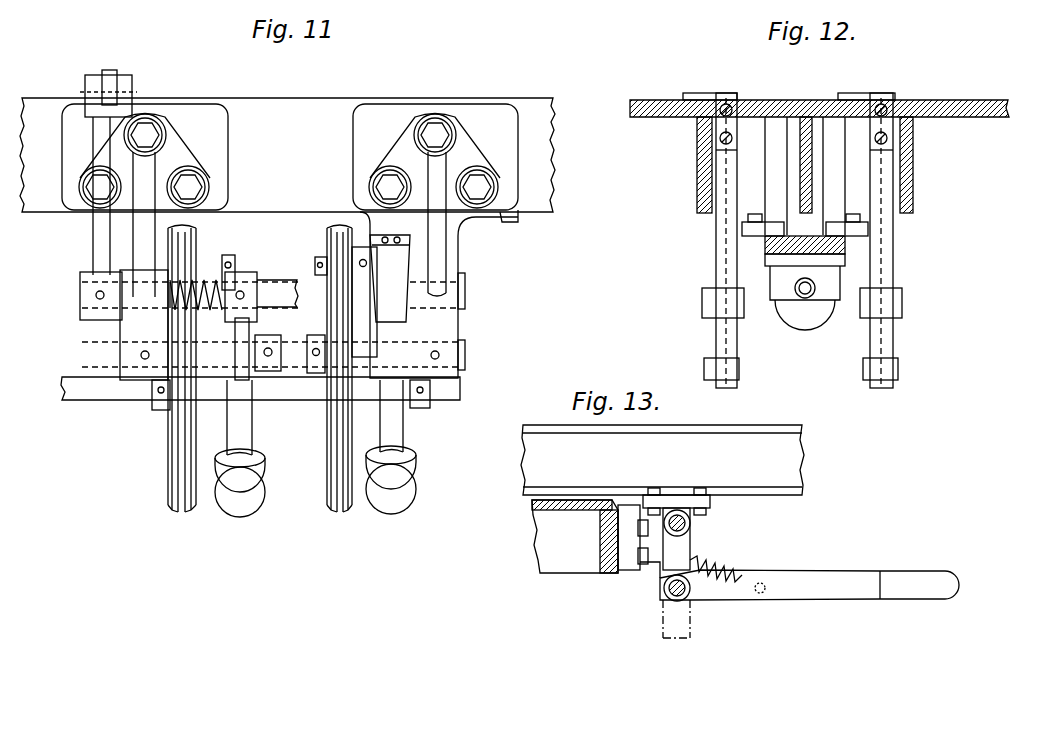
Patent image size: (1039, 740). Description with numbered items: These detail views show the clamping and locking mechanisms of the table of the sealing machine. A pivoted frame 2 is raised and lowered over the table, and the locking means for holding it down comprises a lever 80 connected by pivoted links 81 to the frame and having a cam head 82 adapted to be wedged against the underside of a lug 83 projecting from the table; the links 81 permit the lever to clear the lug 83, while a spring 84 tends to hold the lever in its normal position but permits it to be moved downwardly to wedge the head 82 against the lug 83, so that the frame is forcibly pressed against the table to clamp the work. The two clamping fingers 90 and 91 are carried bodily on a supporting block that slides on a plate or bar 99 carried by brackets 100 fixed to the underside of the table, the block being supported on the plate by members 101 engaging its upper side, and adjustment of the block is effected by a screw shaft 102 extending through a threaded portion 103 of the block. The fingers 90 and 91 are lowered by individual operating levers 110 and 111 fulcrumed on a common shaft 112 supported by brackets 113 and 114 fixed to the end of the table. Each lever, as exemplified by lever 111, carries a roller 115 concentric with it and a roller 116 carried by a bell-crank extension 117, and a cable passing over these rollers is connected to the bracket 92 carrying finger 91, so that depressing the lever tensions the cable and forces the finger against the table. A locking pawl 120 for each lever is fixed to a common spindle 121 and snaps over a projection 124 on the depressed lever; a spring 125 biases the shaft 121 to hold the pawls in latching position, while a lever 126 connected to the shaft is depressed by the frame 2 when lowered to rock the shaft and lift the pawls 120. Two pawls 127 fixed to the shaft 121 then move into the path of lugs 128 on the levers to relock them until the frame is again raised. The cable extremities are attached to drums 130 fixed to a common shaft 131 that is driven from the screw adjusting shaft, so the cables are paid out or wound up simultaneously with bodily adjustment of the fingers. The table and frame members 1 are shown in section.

In FIG. 11, the frame rail 1 is at (553, 195).
In FIG. 12, the frame rail 1 is at (1008, 112).
In FIG. 13, the frame rail 1 is at (545, 538).
In FIG. 13, the pivoted frame 2 is at (750, 432).
In FIG. 13, the lever 80 is at (900, 598).
In FIG. 13, the pivoted links 81 is at (692, 540).
In FIG. 13, the cam head 82 is at (660, 598).
In FIG. 13, the lug 83 is at (655, 565).
In FIG. 13, the spring 84 is at (722, 570).
In FIG. 12, the clamping finger 90 is at (870, 96).
In FIG. 12, the clamping finger 91 is at (698, 96).
In FIG. 12, the bracket 92 is at (712, 268).
In FIG. 12, the plate or bar 99 is at (818, 235).
In FIG. 12, the brackets 100 is at (800, 163).
In FIG. 12, the members 101 is at (768, 225).
In FIG. 12, the screw shaft 102 is at (810, 292).
In FIG. 12, the threaded portion 103 is at (802, 305).
In FIG. 11, the operating lever 110 is at (250, 505).
In FIG. 11, the operating lever 111 is at (400, 503).
In FIG. 11, the common shaft 112 is at (460, 355).
In FIG. 11, the bracket 113 is at (120, 337).
In FIG. 11, the bracket 114 is at (455, 257).
In FIG. 11, the roller 115 is at (333, 320).
In FIG. 11, the roller 116 is at (328, 233).
In FIG. 11, the bell-crank extension 117 is at (355, 300).
In FIG. 11, the locking pawl 120 is at (262, 278).
In FIG. 11, the spindle 121 is at (462, 296).
In FIG. 11, the projection 124 is at (385, 290).
In FIG. 11, the spring 125 is at (213, 282).
In FIG. 11, the lever 126 is at (95, 238).
In FIG. 11, the pawls 127 is at (249, 325).
In FIG. 11, the lugs 128 is at (243, 400).
In FIG. 11, the drums 130 is at (172, 510).
In FIG. 11, the shaft 131 is at (92, 395).